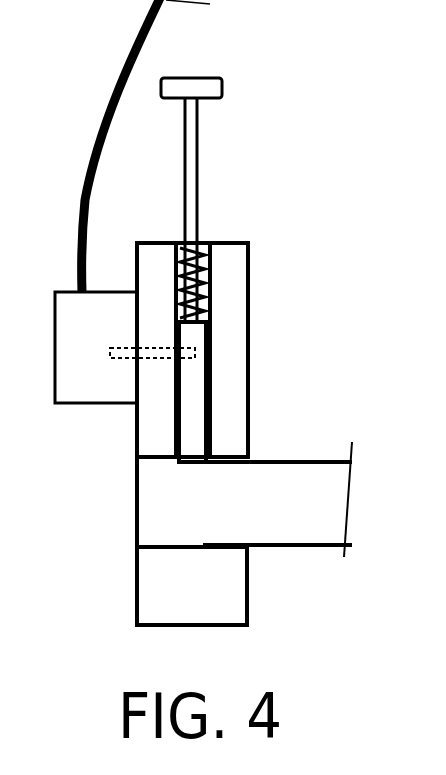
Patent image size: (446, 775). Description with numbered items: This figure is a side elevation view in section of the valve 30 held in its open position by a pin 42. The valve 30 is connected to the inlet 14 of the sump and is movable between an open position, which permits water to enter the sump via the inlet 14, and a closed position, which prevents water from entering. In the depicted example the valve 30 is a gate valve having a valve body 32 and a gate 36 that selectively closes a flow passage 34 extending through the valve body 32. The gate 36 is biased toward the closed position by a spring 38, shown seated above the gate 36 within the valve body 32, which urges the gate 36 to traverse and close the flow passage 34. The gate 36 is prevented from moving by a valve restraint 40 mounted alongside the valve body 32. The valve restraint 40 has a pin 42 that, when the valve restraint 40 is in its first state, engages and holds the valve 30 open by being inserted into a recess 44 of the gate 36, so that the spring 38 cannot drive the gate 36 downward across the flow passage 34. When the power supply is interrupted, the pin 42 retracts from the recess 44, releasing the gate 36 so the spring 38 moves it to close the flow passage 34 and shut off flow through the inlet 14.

The inlet 14 is at (302, 507).
The valve 30 is at (183, 592).
The valve body 32 is at (235, 300).
The flow passage 34 is at (167, 497).
The gate 36 is at (192, 423).
The spring 38 is at (205, 307).
The valve restraint 40 is at (80, 373).
The pin 42 is at (128, 357).
The recess 44 is at (197, 358).